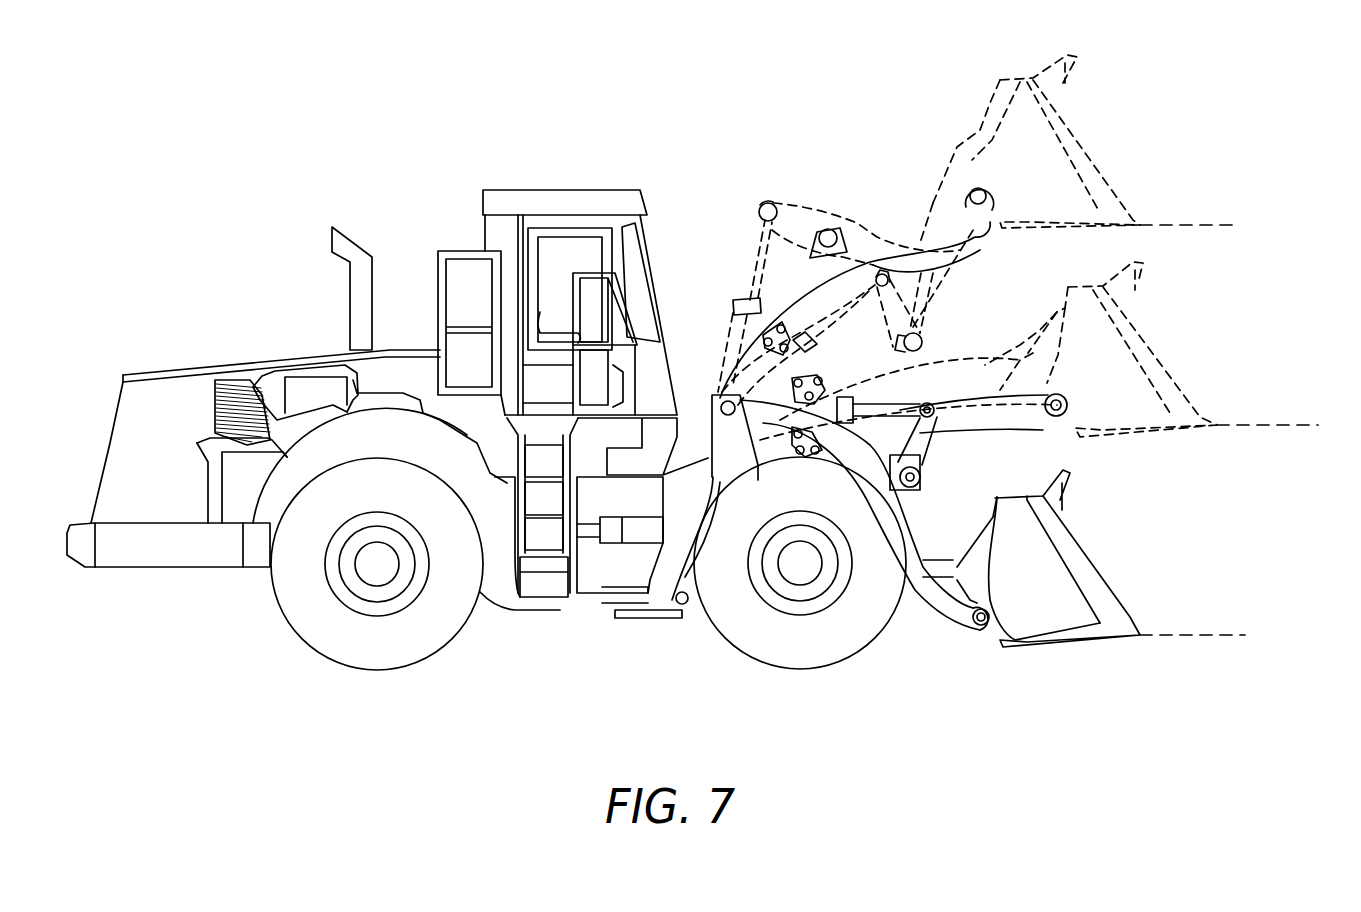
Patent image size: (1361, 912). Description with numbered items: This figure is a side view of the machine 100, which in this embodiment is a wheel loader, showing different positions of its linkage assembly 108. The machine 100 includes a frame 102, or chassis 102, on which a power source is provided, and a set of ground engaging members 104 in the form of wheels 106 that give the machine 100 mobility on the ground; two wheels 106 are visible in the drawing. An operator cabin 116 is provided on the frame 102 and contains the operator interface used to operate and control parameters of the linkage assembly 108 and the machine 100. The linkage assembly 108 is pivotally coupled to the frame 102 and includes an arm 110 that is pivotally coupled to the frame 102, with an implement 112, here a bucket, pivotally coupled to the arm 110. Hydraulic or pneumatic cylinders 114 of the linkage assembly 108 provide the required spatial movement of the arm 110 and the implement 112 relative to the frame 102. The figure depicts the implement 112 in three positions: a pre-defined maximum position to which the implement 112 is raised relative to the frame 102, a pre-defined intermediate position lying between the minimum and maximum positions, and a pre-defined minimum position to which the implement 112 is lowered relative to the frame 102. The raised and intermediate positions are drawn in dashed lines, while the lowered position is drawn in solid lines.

The machine 100 is at (556, 117).
The frame 102 is at (553, 612).
The ground engaging members 104 is at (313, 664).
The wheels 106 is at (443, 627).
The linkage assembly 108 is at (838, 204).
The arm 110 is at (903, 255).
The implement 112 is at (1068, 351).
The hydraulic or pneumatic cylinders 114 is at (762, 258).
The operator cabin 116 is at (593, 200).